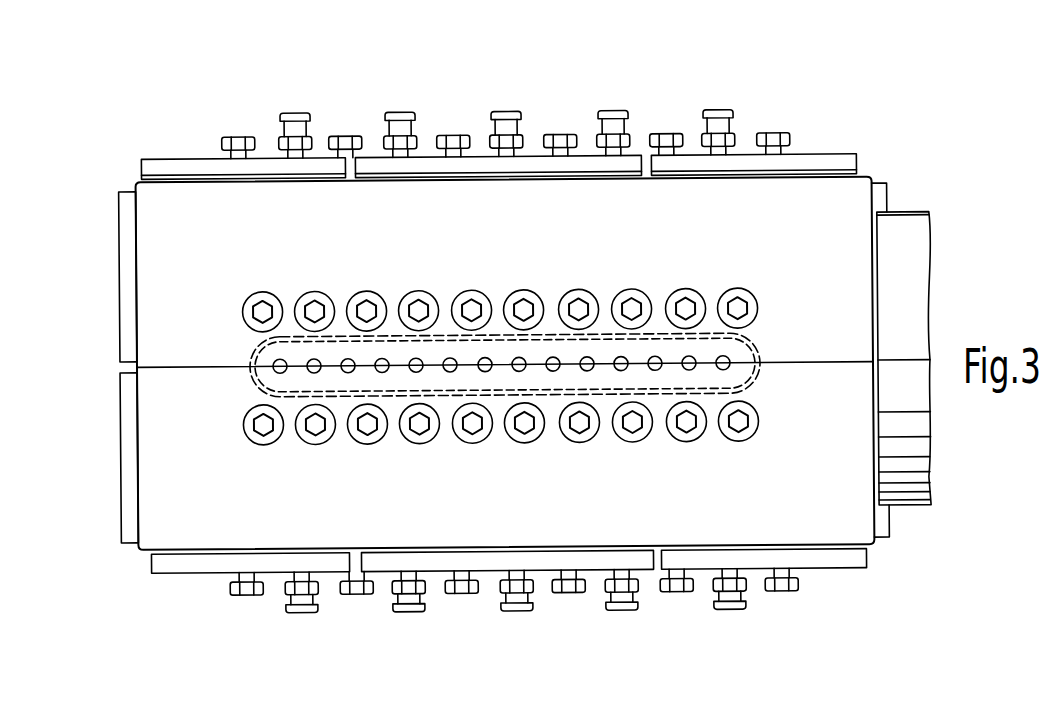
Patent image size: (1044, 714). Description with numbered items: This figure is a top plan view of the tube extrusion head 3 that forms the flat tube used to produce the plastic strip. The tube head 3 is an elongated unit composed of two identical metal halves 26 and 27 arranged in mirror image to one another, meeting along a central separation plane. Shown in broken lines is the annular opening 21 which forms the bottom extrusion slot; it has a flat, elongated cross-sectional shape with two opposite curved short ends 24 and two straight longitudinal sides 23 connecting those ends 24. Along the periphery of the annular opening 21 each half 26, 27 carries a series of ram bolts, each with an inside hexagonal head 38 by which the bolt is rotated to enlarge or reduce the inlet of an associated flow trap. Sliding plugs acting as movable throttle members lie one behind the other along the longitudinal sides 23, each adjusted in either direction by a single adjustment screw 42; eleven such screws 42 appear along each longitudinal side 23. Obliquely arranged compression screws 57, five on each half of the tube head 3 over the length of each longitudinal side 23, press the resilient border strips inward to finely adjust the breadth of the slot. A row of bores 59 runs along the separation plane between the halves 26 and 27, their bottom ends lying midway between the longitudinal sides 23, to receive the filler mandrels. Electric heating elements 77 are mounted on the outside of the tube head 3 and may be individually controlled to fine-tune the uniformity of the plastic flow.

The tube extrusion head 3 is at (818, 585).
The annular opening 21 is at (748, 385).
The longitudinal sides 23 is at (442, 335).
The curved short sides 24 is at (250, 355).
The first half of tube head 26 is at (165, 262).
The second half of tube head 27 is at (170, 428).
The inside hexagonal head 38 is at (309, 291).
The adjustment screw 42 is at (281, 145).
The compression screws 57 is at (296, 111).
The bores 59 is at (411, 359).
The electric heating elements 77 is at (190, 165).